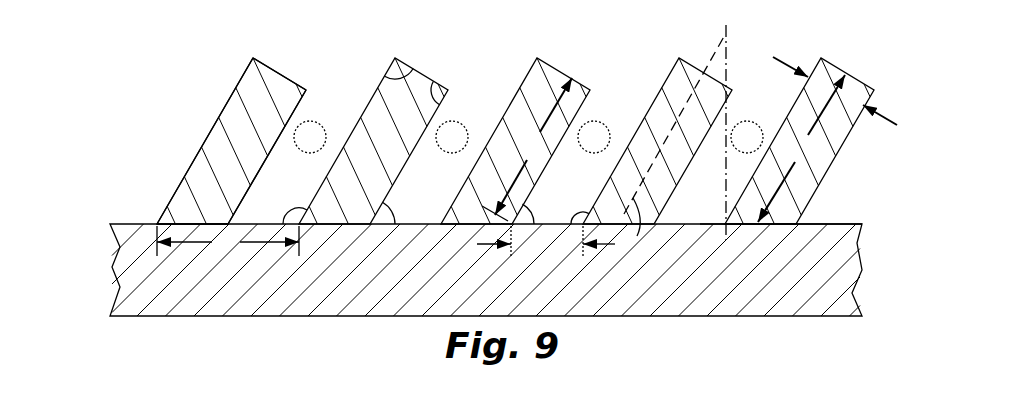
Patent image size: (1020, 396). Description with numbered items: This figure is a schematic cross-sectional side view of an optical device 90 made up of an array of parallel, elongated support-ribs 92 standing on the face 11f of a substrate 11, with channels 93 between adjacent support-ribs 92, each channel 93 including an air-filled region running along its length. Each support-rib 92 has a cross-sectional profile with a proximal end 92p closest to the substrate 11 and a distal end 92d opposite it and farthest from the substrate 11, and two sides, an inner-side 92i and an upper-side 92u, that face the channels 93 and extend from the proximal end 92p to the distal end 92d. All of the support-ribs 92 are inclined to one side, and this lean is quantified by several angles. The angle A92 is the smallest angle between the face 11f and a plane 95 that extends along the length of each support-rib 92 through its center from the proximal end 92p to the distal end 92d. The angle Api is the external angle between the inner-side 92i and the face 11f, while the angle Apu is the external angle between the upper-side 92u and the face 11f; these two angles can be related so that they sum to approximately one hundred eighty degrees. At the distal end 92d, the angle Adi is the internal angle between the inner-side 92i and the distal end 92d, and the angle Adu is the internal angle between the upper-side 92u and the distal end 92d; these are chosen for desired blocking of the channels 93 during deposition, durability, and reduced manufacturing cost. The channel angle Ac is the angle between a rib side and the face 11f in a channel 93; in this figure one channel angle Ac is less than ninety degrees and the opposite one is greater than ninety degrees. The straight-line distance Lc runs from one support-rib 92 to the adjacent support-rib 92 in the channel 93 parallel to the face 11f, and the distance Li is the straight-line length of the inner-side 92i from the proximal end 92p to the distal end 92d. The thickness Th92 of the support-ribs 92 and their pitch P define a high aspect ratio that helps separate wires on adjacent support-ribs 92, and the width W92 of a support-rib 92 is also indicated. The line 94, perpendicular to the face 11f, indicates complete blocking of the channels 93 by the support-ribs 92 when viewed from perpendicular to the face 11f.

The optical device 90 is at (122, 47).
The support-rib 92 is at (108, 143).
The distal end 92d is at (272, 65).
The inner-side 92i is at (298, 106).
The upper-side 92u is at (201, 145).
The proximal end 92p is at (181, 222).
The channel 93 is at (528, 137).
The line 94 is at (727, 78).
The plane 95 is at (708, 70).
The substrate 11 is at (501, 300).
The face of the substrate 11f is at (830, 223).
The pitch P is at (228, 241).
The straight-line channel distance Lc is at (546, 244).
The inner-side length Li is at (527, 149).
The thickness of support-ribs Th92 is at (795, 177).
The fin width W92 is at (902, 129).
The external angle between upper-side and face Apu is at (292, 210).
The external angle between inner-side and face Api is at (394, 211).
The internal angle between upper-side and distal end Adu is at (397, 66).
The internal angle between inner-side and distal end Adi is at (442, 85).
The channel angle Ac is at (576, 213).
The lean angle of support-rib A92 is at (637, 236).